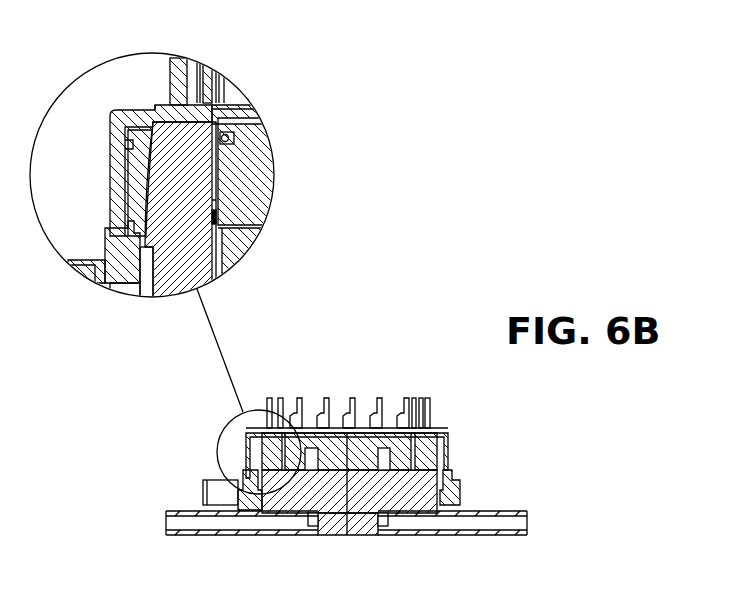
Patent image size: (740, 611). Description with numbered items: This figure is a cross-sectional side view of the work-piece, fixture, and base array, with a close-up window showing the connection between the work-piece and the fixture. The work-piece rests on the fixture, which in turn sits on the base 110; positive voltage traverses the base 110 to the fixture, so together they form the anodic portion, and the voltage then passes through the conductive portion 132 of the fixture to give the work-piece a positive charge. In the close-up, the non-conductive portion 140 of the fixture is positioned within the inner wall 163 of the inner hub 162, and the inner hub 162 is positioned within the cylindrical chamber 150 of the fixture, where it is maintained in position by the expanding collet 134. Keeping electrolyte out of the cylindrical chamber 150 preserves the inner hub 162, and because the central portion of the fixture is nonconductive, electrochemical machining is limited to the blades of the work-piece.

The base 110 is at (528, 531).
The conductive portion 132 is at (206, 258).
The expanding collet 134 is at (133, 183).
The non-conductive portion 140 is at (268, 193).
The cylindrical chamber 150 is at (218, 227).
The inner hub 162 is at (215, 152).
The inner wall 163 is at (208, 105).